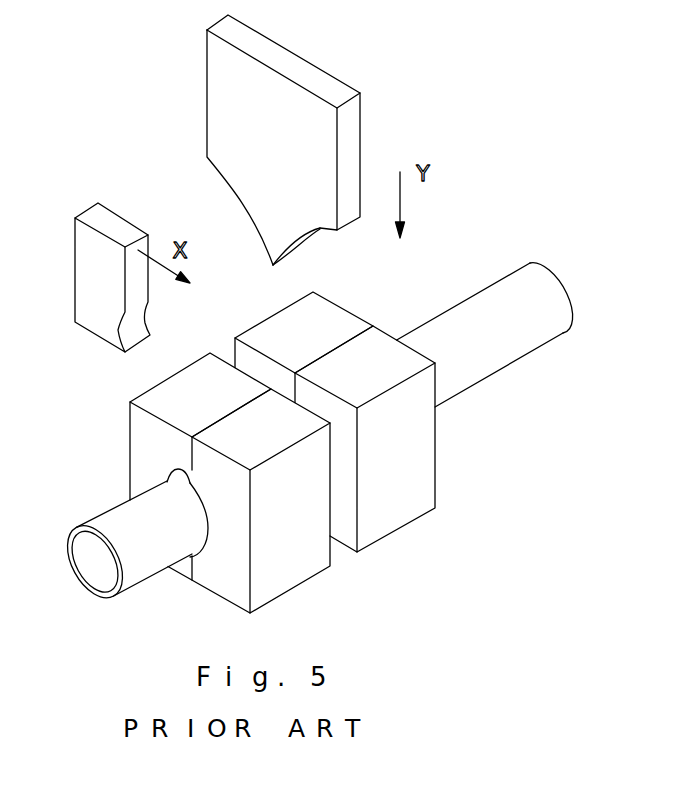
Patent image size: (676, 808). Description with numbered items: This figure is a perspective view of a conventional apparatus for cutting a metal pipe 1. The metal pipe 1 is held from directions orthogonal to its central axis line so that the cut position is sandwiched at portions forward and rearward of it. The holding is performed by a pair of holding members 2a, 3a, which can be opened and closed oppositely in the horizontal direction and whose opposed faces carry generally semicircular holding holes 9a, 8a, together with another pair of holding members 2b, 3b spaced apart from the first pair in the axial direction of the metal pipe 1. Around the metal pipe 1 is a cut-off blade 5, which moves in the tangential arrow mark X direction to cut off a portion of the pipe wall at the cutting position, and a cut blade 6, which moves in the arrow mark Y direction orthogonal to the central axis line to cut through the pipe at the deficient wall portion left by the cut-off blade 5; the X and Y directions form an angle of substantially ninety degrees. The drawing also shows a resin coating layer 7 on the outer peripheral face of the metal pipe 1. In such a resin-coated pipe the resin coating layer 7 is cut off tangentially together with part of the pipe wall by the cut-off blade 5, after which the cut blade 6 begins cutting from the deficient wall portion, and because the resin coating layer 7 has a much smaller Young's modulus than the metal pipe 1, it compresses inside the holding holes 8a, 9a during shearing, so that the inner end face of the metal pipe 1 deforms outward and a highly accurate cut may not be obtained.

The metal pipe 1 is at (62, 542).
The holding member 2a is at (157, 395).
The holding member 2b is at (283, 323).
The holding member 3a is at (288, 570).
The holding member 3b is at (427, 475).
The cut-off blade 5 is at (84, 260).
The cut blade 6 is at (322, 138).
The resin coating layer 7 is at (473, 313).
The holding hole 8a is at (203, 518).
The holding hole 9a is at (167, 482).